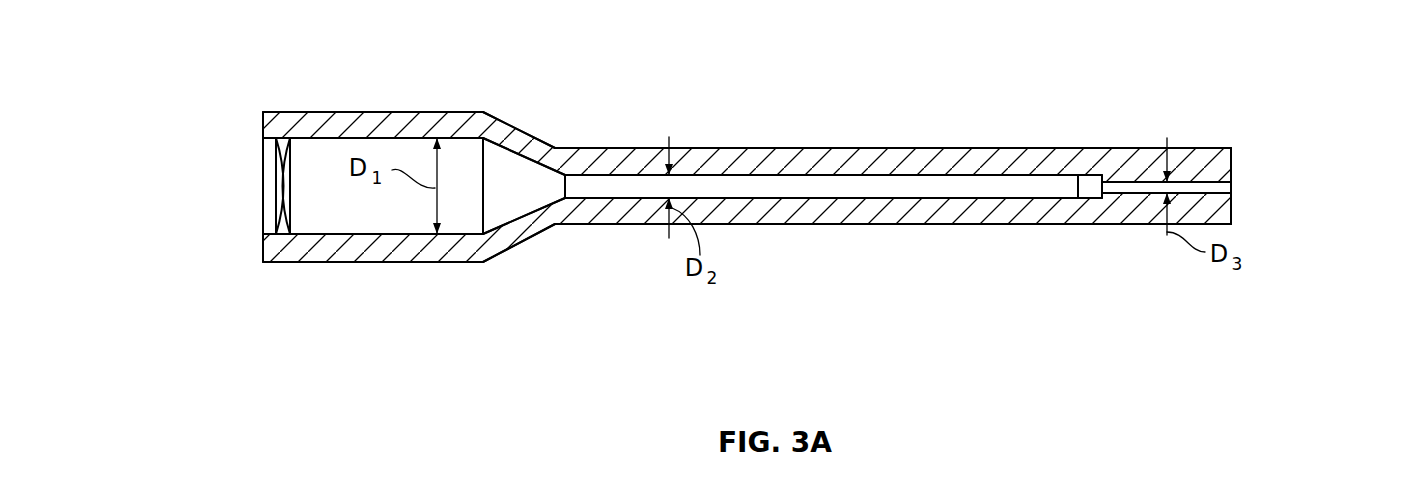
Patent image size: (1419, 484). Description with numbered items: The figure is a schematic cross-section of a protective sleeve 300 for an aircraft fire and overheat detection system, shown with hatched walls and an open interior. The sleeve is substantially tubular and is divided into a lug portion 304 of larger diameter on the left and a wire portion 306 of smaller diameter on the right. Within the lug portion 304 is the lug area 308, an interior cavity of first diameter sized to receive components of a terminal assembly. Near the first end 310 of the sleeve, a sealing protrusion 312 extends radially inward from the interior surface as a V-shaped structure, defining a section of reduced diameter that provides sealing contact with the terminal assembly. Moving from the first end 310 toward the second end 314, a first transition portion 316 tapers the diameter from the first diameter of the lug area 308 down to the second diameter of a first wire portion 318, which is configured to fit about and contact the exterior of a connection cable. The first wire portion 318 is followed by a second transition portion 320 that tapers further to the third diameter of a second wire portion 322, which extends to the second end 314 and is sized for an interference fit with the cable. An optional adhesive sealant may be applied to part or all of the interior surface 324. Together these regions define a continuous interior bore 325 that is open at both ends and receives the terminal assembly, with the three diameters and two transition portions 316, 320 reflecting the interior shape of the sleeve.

The protective sleeve 300 is at (1288, 73).
The lug portion 304 is at (351, 284).
The wire portion 306 is at (1164, 299).
The lug area 308 is at (263, 112).
The first end 310 is at (263, 214).
The sealing protrusion 312 is at (287, 158).
The second end 314 is at (1231, 193).
The first transition portion 316 is at (565, 148).
The first wire portion 318 is at (1078, 224).
The second transition portion 320 is at (1089, 182).
The second wire portion 322 is at (1102, 148).
The interior surface 324 is at (937, 185).
The interior bore 325 is at (311, 212).